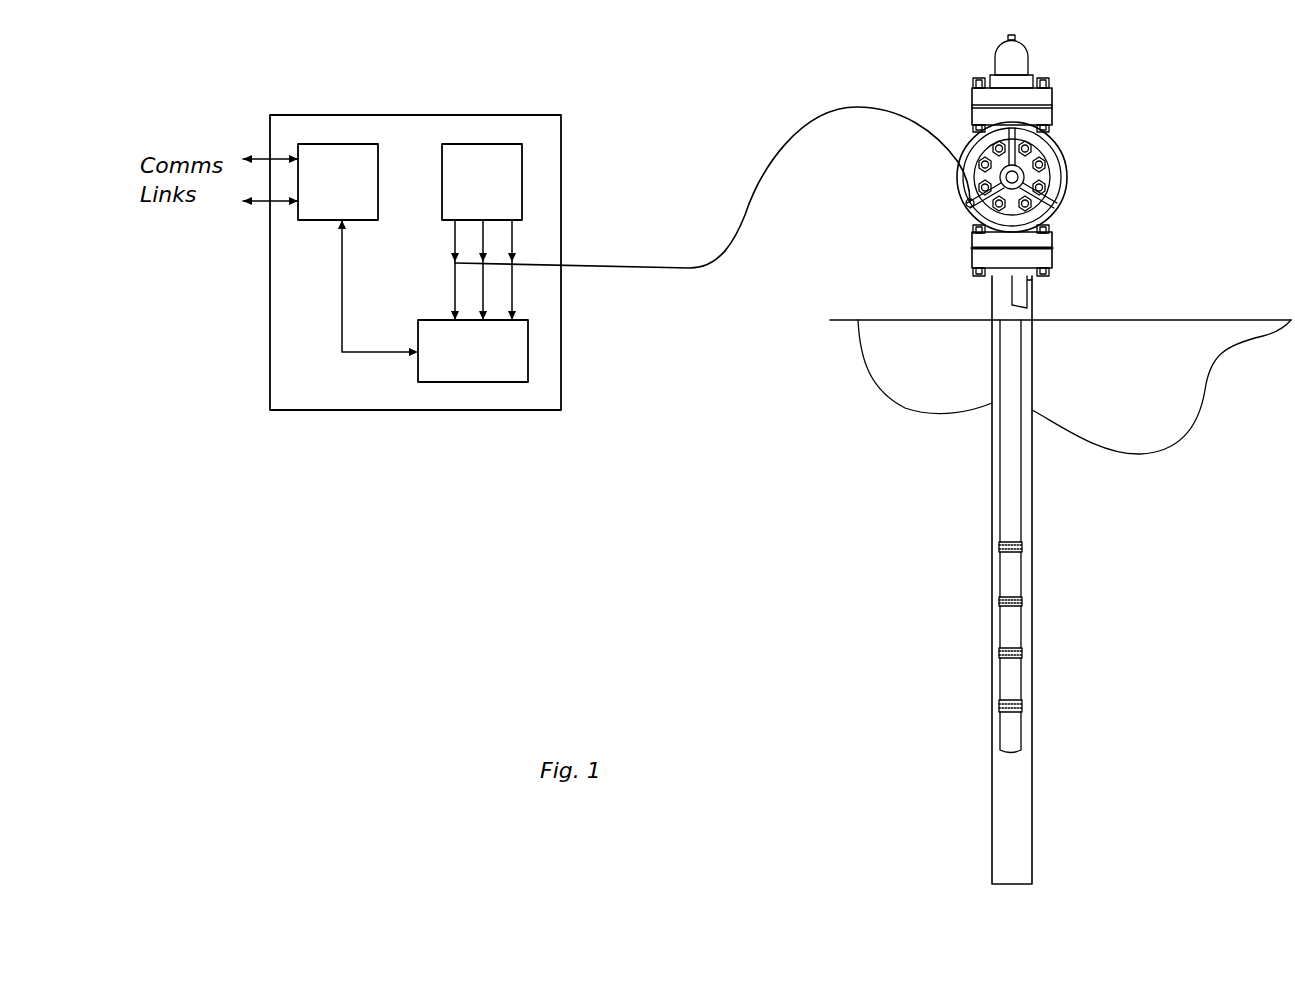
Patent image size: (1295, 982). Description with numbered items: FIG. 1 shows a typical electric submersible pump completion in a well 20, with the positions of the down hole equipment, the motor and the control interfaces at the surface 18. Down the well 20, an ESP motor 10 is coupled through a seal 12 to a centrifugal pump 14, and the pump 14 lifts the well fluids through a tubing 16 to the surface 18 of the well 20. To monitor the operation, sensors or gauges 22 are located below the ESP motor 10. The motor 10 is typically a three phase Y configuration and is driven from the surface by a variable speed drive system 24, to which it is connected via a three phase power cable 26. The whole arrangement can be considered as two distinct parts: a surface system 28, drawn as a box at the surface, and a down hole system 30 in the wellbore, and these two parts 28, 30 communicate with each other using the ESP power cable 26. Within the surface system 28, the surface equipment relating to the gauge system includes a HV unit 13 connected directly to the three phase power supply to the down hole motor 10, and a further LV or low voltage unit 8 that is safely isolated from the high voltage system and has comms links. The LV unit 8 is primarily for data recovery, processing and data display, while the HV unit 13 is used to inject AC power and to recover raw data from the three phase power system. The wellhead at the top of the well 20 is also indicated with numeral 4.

The wellhead 4 is at (968, 214).
The low voltage unit 8 is at (348, 144).
The ESP motor 10 is at (1020, 685).
The seal 12 is at (1018, 633).
The HV unit 13 is at (480, 382).
The centrifugal pump 14 is at (1020, 580).
The tubing 16 is at (1033, 423).
The surface 18 is at (1156, 312).
The well 20 is at (992, 512).
The sensors or gauges 22 is at (1024, 736).
The variable speed drive system 24 is at (462, 136).
The three phase power cable 26 is at (773, 173).
The surface system 28 is at (333, 426).
The down hole system 30 is at (1217, 592).